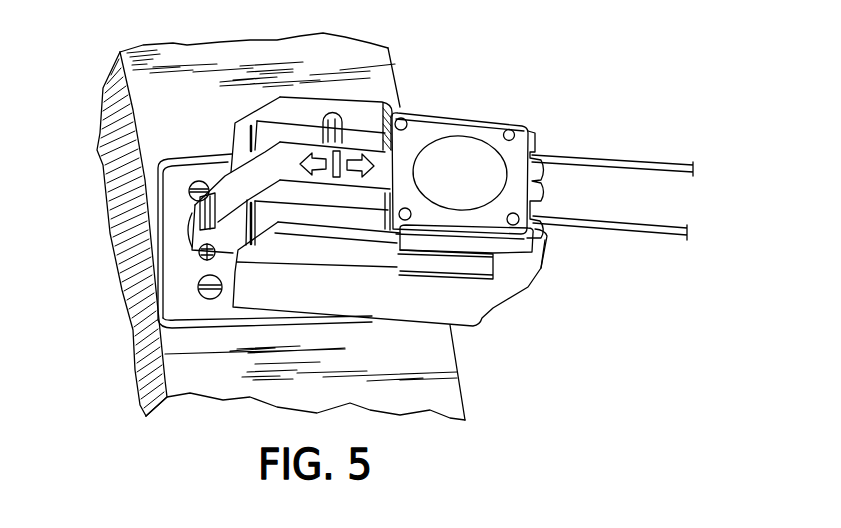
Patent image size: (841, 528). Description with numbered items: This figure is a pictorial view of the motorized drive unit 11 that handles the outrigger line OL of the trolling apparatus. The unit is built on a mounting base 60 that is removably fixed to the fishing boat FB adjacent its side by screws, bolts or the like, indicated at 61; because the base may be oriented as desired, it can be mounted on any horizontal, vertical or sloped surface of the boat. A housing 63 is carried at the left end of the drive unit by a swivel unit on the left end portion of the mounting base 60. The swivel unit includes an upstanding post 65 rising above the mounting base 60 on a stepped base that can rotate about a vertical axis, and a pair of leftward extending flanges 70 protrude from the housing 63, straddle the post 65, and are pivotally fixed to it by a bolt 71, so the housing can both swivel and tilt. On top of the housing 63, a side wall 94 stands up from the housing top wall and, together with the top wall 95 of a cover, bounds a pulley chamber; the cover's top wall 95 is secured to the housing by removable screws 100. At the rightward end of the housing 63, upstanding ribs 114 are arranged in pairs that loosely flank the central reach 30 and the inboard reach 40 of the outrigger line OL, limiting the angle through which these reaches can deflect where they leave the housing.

The fishing boat FB is at (181, 31).
The mounting base 60 is at (193, 158).
The screws 61 is at (189, 182).
The upstanding post 65 is at (190, 217).
The bolt 71 is at (200, 274).
The leftward extending flanges 70 is at (296, 175).
The housing 63 is at (417, 335).
The side wall 94 is at (465, 252).
The upstanding ribs 114 is at (535, 263).
The screws 100 is at (403, 118).
The top wall of cover 95 is at (460, 173).
The motorized drive unit 11 is at (507, 108).
The central reach 30 is at (667, 160).
The outrigger line OL is at (677, 164).
The inboard end reach 40 is at (643, 236).